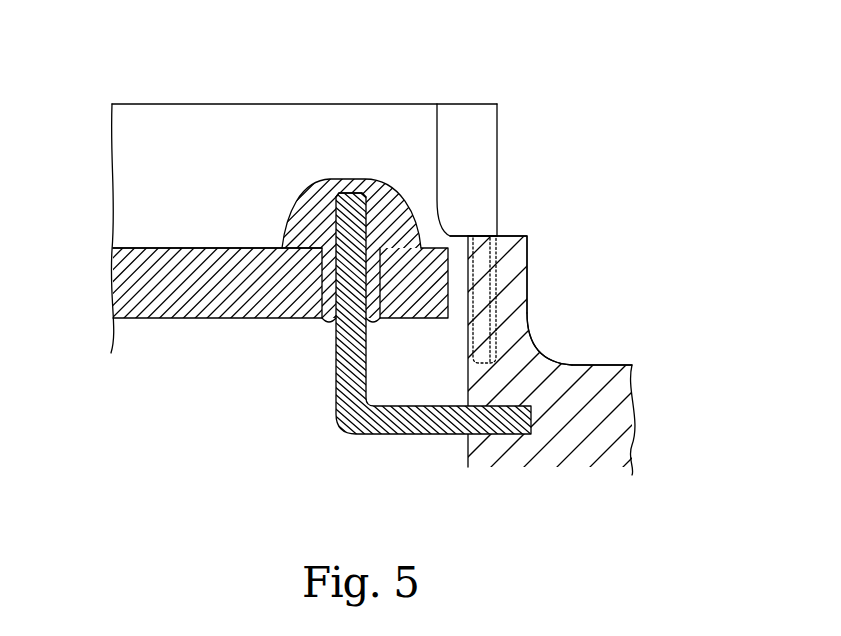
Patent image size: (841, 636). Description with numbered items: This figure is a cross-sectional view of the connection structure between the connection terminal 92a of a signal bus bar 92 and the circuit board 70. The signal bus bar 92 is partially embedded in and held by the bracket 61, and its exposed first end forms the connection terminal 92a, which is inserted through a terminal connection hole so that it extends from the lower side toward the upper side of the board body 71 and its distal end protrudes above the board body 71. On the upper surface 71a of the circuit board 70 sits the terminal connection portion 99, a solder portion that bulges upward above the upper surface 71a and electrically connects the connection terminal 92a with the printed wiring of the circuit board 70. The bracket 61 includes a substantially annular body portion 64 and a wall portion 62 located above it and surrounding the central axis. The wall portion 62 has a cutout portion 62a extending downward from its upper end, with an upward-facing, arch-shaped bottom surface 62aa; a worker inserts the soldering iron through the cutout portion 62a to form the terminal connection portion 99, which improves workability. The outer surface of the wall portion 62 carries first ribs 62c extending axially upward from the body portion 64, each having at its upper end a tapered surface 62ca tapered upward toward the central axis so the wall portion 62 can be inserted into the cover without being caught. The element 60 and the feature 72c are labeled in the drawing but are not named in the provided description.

The housing body 60 is at (661, 295).
The bracket 61 is at (607, 362).
The wall portion 62 is at (305, 104).
The cutout portion 62a is at (470, 127).
The bottom surface 62aa is at (497, 236).
The first rib 62c is at (520, 290).
The tapered surface 62ca is at (497, 238).
The body portion 64 is at (518, 364).
The circuit board 70 is at (176, 212).
The board body 71 is at (235, 272).
The upper surface 71a is at (162, 250).
The recess 72c is at (348, 316).
The signal bus bar 92 is at (417, 440).
The connection terminal 92a is at (352, 195).
The terminal connection portion 99 is at (390, 190).